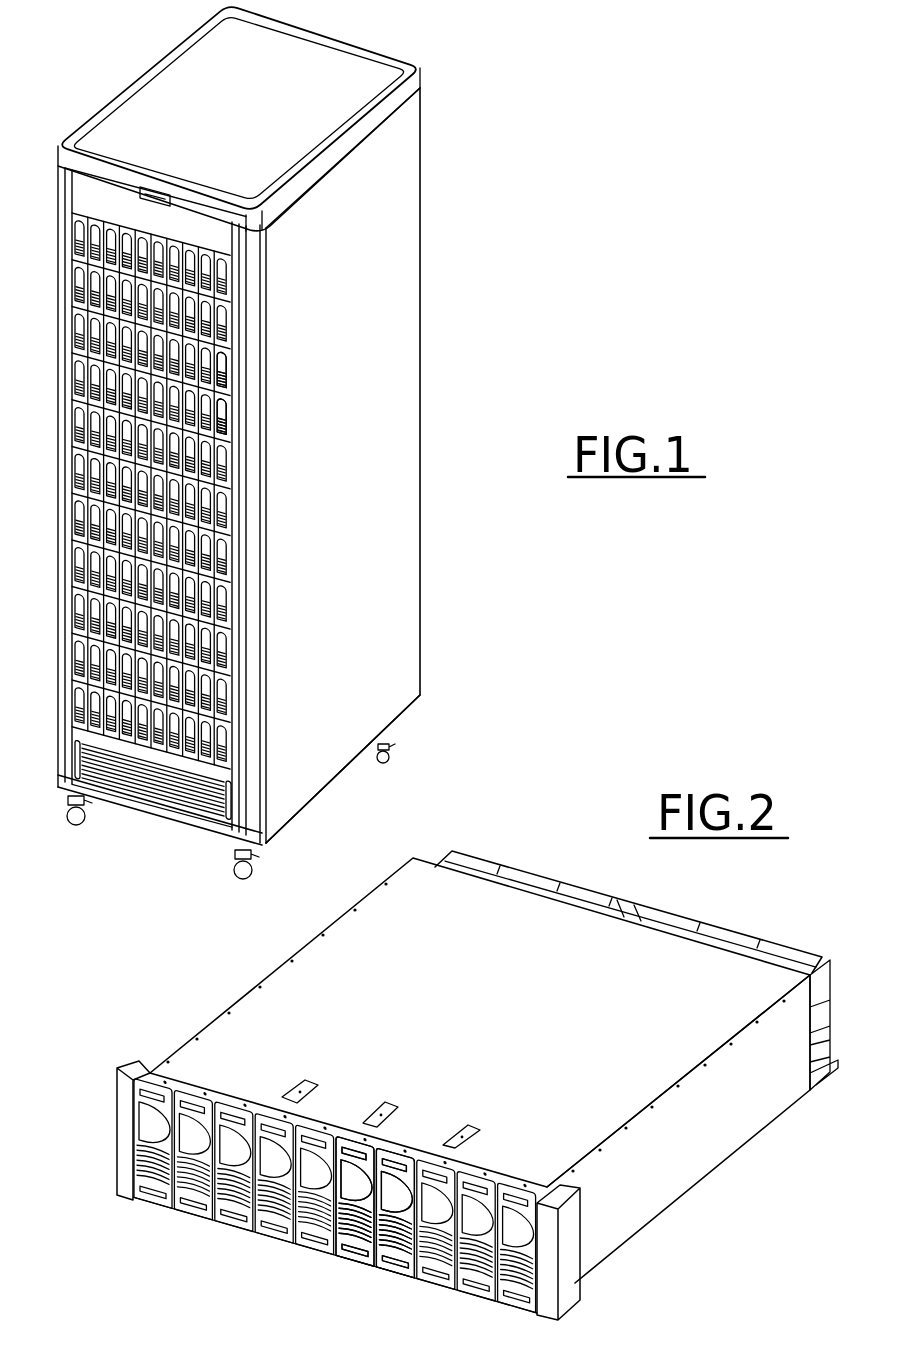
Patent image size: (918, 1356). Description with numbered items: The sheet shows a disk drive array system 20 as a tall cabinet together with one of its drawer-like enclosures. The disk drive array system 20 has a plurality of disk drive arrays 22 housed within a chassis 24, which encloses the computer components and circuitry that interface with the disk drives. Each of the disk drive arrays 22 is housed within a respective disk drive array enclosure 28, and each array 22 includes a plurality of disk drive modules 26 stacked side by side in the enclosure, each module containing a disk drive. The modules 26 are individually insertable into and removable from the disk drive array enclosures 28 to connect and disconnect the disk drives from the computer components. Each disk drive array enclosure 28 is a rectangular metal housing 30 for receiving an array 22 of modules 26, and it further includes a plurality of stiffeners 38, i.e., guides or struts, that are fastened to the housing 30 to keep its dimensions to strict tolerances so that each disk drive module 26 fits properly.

In FIG. 1, the disk drive array system 20 is at (566, 153).
In FIG. 1, the disk drive array 22 is at (68, 601).
In FIG. 2, the disk drive array 22 is at (247, 1232).
In FIG. 1, the chassis 24 is at (412, 478).
In FIG. 1, the disk drive module 26 is at (220, 422).
In FIG. 2, the disk drive module 26 is at (435, 1262).
In FIG. 1, the disk drive array enclosure 28 is at (240, 720).
In FIG. 2, the disk drive array enclosure 28 is at (302, 947).
In FIG. 2, the housing 30 is at (715, 1143).
In FIG. 2, the stiffeners 38 is at (468, 1137).